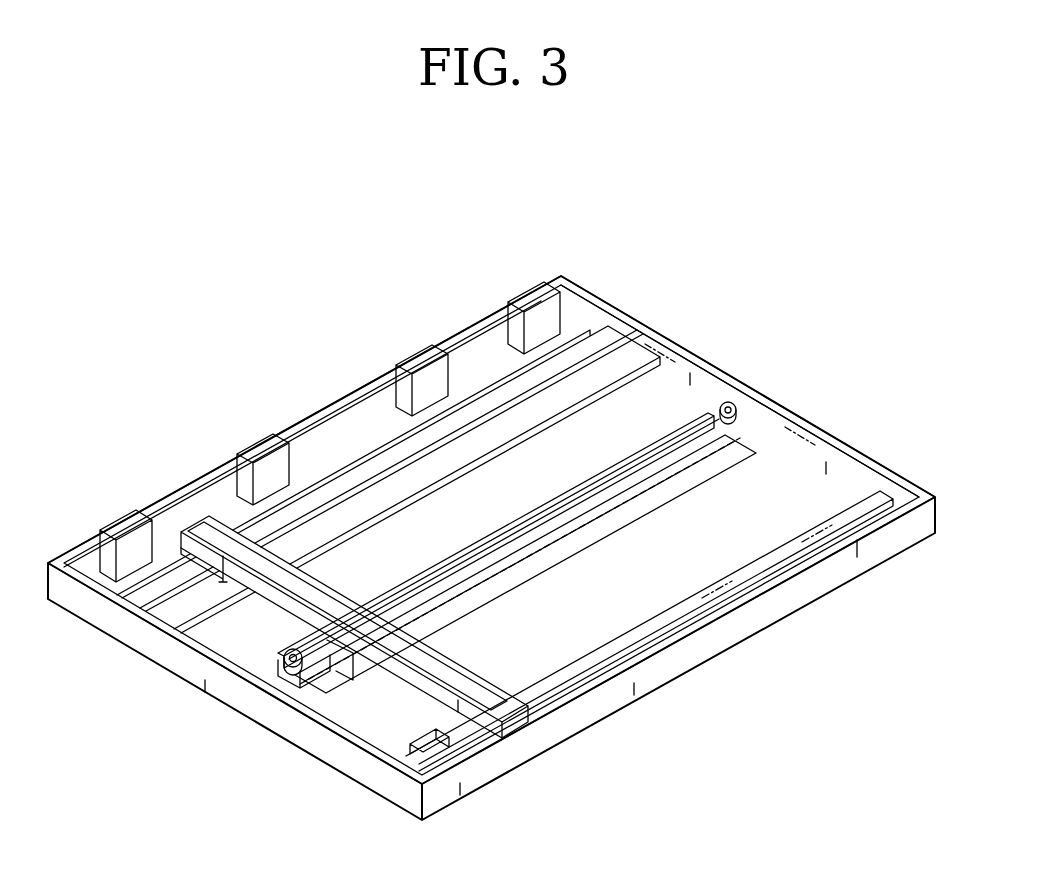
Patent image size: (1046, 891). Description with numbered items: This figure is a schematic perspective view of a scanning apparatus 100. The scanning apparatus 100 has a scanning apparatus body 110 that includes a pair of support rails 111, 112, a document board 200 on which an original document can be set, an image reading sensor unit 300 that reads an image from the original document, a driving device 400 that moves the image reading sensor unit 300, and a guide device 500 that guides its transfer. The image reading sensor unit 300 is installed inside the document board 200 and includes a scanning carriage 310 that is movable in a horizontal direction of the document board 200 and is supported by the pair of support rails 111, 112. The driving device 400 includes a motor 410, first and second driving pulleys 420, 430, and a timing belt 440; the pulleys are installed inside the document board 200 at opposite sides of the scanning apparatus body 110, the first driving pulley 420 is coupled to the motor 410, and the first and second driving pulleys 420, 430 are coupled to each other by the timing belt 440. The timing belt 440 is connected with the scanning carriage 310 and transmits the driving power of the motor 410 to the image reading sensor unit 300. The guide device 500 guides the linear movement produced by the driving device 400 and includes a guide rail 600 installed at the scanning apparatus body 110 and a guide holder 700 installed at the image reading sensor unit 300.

The scanning apparatus 100 is at (779, 249).
The scanning apparatus body 110 is at (580, 291).
The support rail 111 is at (490, 367).
The support rail 112 is at (882, 508).
The document board 200 is at (808, 411).
The image reading sensor unit 300 is at (220, 517).
The scanning carriage 310 is at (183, 540).
The driving device 400 is at (552, 644).
The motor 410 is at (722, 442).
The first driving pulley 420 is at (748, 425).
The second driving pulley 430 is at (481, 796).
The timing belt 440 is at (437, 593).
The guide device 500 is at (459, 603).
The guide rail 600 is at (287, 683).
The guide holder 700 is at (290, 651).